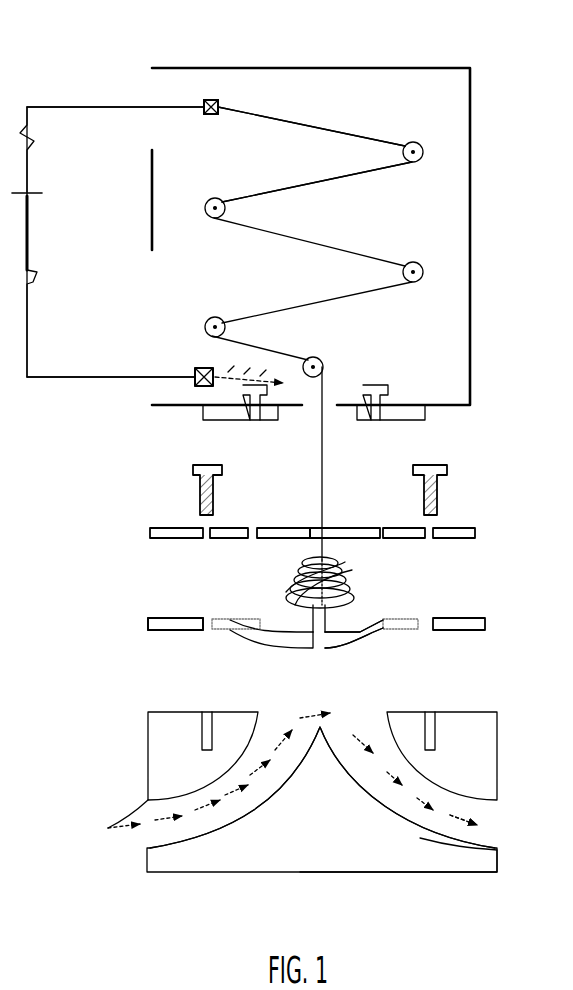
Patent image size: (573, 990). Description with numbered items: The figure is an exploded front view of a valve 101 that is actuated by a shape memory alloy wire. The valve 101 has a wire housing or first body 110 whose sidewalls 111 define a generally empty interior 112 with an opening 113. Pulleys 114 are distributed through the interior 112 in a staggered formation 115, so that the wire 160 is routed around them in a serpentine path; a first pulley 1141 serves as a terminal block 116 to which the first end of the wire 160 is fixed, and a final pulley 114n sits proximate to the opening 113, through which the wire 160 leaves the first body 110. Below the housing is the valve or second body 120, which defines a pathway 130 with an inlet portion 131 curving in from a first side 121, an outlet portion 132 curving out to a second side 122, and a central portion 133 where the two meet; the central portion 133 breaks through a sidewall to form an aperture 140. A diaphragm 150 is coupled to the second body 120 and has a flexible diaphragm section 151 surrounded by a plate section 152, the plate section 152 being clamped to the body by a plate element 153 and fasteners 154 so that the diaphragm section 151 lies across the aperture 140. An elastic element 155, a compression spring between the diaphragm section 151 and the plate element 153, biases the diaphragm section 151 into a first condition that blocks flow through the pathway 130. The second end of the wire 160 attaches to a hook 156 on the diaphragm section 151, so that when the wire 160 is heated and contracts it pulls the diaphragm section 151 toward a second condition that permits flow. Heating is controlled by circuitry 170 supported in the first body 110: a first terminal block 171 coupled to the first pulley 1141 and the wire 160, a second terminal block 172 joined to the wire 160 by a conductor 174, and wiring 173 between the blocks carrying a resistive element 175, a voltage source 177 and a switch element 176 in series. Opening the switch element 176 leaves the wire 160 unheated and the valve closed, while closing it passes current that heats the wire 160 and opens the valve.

The valve 101 is at (112, 62).
The first body 110 is at (307, 68).
The sidewalls 111 is at (151, 202).
The interior 112 is at (295, 166).
The opening 113 is at (334, 408).
The pulleys 114 is at (424, 150).
The first pulley 1141 is at (217, 101).
The final pulley 114n is at (322, 362).
The staggered formation 115 is at (327, 123).
The terminal block 116 is at (212, 114).
The second body 120 is at (148, 733).
The first side 121 is at (150, 858).
The second side 122 is at (497, 856).
The pathway 130 is at (146, 808).
The inlet portion 131 is at (142, 838).
The outlet portion 132 is at (490, 836).
The central portion 133 is at (319, 730).
The aperture 140 is at (276, 706).
The diaphragm 150 is at (148, 623).
The diaphragm section 151 is at (368, 630).
The plate section 152 is at (186, 630).
The plate element 153 is at (150, 531).
The fasteners 154 is at (222, 470).
The elastic element 155 is at (290, 585).
The hook 156 is at (340, 597).
The wire 160 is at (336, 180).
The circuitry 170 is at (45, 368).
The first terminal block 171 is at (206, 100).
The second terminal block 172 is at (196, 386).
The wiring 173 is at (90, 378).
The conductor 174 is at (266, 367).
The resistive element 175 is at (30, 128).
The switch element 176 is at (38, 272).
The voltage source 177 is at (30, 193).